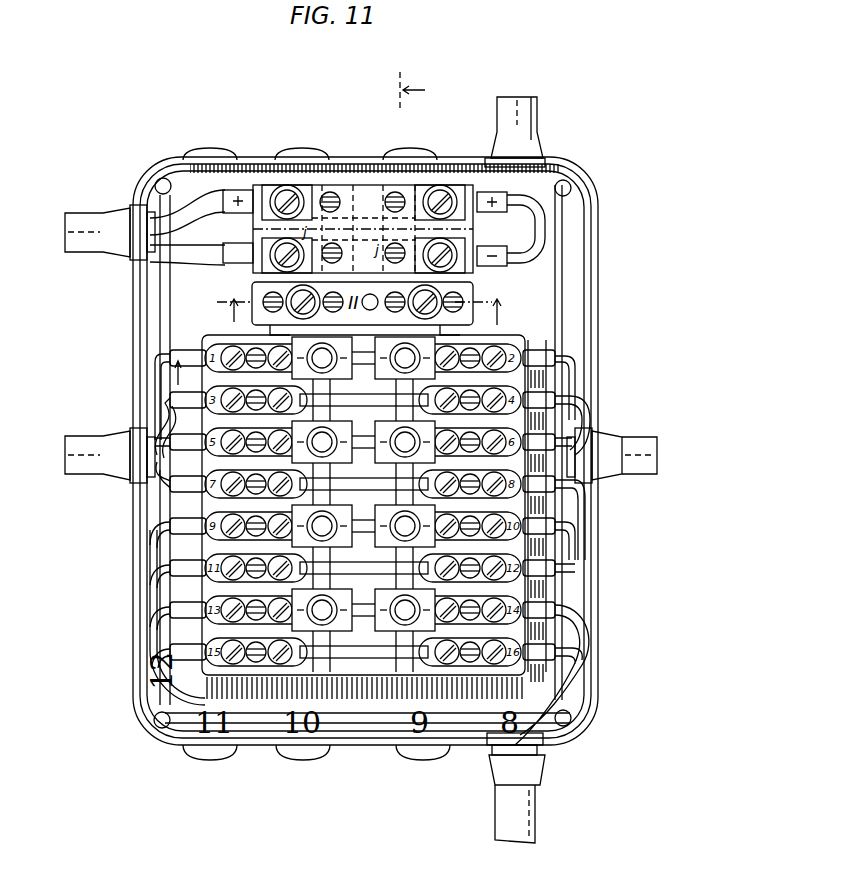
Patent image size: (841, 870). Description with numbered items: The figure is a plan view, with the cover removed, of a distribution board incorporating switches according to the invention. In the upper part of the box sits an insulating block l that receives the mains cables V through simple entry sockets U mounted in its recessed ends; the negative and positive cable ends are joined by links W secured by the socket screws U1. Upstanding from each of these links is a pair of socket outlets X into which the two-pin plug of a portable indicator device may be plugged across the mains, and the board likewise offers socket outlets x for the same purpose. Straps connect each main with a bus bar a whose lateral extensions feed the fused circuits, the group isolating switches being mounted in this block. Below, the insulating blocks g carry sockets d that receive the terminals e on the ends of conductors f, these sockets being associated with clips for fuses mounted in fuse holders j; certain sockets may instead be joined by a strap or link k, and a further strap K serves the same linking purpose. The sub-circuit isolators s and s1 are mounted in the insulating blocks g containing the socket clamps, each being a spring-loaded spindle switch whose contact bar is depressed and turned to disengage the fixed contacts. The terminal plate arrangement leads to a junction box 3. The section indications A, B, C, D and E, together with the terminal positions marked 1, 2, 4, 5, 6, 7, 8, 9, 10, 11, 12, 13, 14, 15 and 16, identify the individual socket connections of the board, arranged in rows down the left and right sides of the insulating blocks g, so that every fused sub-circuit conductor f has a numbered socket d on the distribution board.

The mains cable V is at (192, 212).
The entry socket U is at (253, 233).
The socket screw U1 is at (282, 248).
The socket outlet X is at (322, 240).
The link W is at (363, 240).
The insulating block l is at (348, 245).
The socket outlet x is at (396, 235).
The bus bar a is at (457, 190).
The direction arrow E is at (436, 90).
The section line A is at (228, 315).
The section line B is at (510, 315).
The sub-circuit isolator s is at (222, 348).
The socket d is at (195, 352).
The direction arrow C is at (178, 374).
The sub-circuit isolator s1 is at (167, 397).
The insulating block g is at (527, 337).
The terminal strip D is at (550, 377).
The conductor f is at (573, 417).
The terminal e is at (525, 523).
The strap K is at (225, 530).
The fuse holder j is at (388, 614).
The strap k is at (412, 655).
The terminal 1 is at (188, 358).
The terminal 2 is at (539, 358).
The junction box 3 is at (188, 400).
The terminal 4 is at (539, 400).
The terminal 5 is at (188, 442).
The terminal 6 is at (539, 442).
The terminal 7 is at (188, 484).
The terminal 8 is at (539, 484).
The terminal 9 is at (188, 526).
The terminal 10 is at (539, 526).
The terminal 11 is at (188, 568).
The terminal 12 is at (539, 568).
The terminal 13 is at (188, 610).
The terminal 14 is at (539, 610).
The terminal 15 is at (188, 652).
The terminal 16 is at (539, 652).